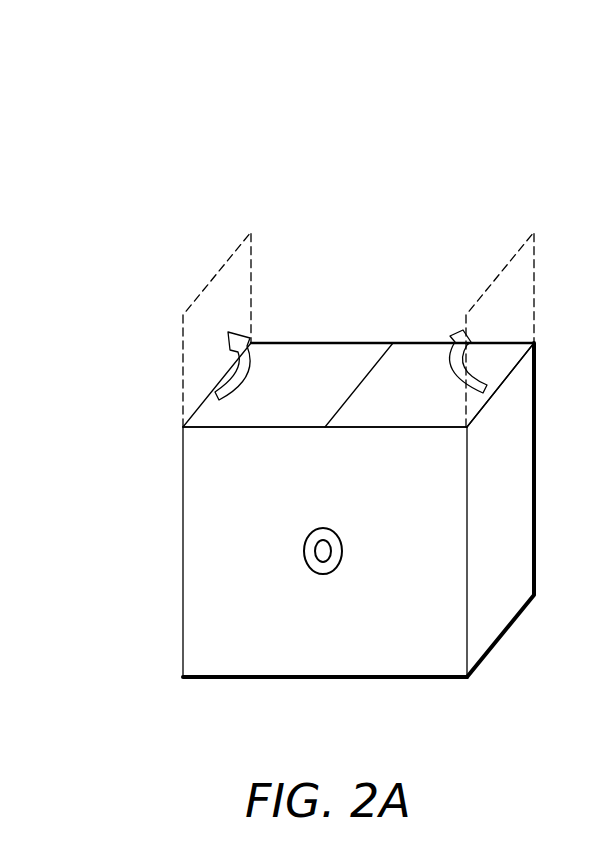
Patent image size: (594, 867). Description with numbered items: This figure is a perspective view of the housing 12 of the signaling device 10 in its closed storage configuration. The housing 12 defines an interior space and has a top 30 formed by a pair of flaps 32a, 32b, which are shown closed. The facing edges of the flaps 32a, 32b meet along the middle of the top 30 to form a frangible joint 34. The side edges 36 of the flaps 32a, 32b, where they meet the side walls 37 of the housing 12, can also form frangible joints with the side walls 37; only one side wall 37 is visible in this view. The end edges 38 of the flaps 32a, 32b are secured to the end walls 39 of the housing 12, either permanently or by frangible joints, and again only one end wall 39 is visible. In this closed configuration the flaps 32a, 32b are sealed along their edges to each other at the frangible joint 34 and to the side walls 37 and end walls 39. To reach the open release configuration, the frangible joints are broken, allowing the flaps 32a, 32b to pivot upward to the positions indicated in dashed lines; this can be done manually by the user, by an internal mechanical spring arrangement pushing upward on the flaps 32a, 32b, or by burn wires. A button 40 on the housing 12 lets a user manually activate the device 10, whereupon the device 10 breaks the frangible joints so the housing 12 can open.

The signaling device 10 is at (154, 139).
The housing 12 is at (264, 662).
The top 30 is at (342, 352).
The first flap 32a is at (227, 262).
The second flap 32b is at (403, 351).
The frangible joint 34 is at (352, 400).
The side edges 36 is at (322, 341).
The side wall 37 is at (358, 652).
The end edges 38 is at (197, 402).
The end wall 39 is at (515, 493).
The button 40 is at (323, 551).